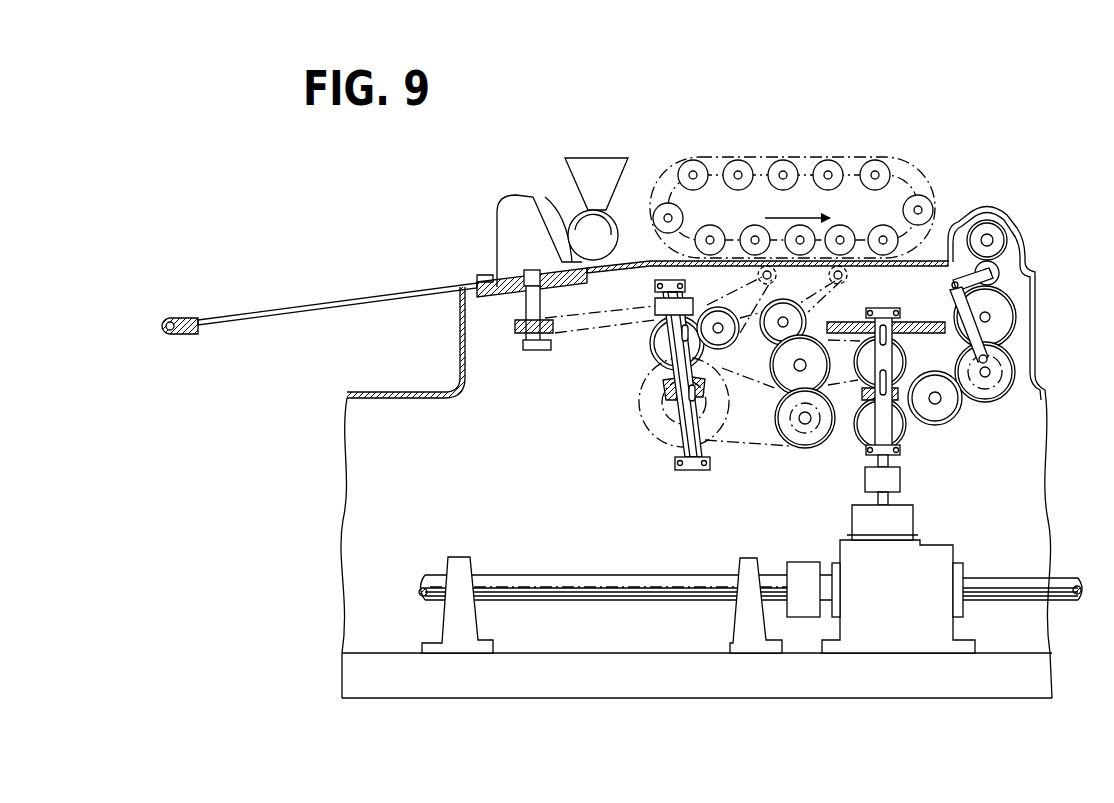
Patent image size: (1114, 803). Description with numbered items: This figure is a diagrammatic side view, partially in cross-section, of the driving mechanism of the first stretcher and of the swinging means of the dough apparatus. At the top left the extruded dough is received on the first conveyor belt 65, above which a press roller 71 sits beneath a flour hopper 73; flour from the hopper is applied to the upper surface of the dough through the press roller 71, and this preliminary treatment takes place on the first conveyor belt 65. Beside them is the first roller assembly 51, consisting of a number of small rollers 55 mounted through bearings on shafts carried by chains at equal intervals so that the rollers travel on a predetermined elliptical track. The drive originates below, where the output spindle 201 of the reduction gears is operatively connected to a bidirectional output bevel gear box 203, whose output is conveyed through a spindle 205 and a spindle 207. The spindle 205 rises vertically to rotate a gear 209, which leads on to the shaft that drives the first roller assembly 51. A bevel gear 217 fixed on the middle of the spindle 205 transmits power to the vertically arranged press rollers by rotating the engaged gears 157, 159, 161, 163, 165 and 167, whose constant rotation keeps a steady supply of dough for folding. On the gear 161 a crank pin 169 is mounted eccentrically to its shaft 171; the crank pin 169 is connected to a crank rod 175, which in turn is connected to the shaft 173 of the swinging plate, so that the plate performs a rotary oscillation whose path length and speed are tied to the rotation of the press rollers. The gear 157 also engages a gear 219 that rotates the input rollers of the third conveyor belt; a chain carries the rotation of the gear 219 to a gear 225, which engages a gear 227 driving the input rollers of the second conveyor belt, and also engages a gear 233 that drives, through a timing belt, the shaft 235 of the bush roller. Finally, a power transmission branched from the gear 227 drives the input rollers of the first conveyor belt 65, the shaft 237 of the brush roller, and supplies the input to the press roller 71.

The first roller assembly 51 is at (792, 175).
The small rollers 55 is at (784, 158).
The first conveyor belt 65 is at (260, 316).
The press roller 71 is at (605, 222).
The flour hopper 73 is at (602, 170).
The gear 157 is at (900, 484).
The gear 159 is at (946, 418).
The gear 161 is at (1000, 385).
The gear 163 is at (1000, 320).
The gear 165 is at (1000, 290).
The gear 167 is at (987, 230).
The crank pin 169 is at (990, 350).
The shaft 171 is at (985, 380).
The shaft 173 is at (992, 282).
The crank rod 175 is at (960, 315).
The output spindle 201 is at (548, 580).
The bidirectional output bevel gear box 203 is at (940, 552).
The spindle 205 is at (877, 465).
The spindle 207 is at (1015, 603).
The gear 209 is at (900, 315).
The bevel gear 217 is at (877, 432).
The gear 219 is at (908, 358).
The gear 225 is at (795, 393).
The gear 227 is at (806, 430).
The gear 233 is at (783, 378).
The shaft 235 is at (808, 325).
The shaft 237 is at (760, 278).